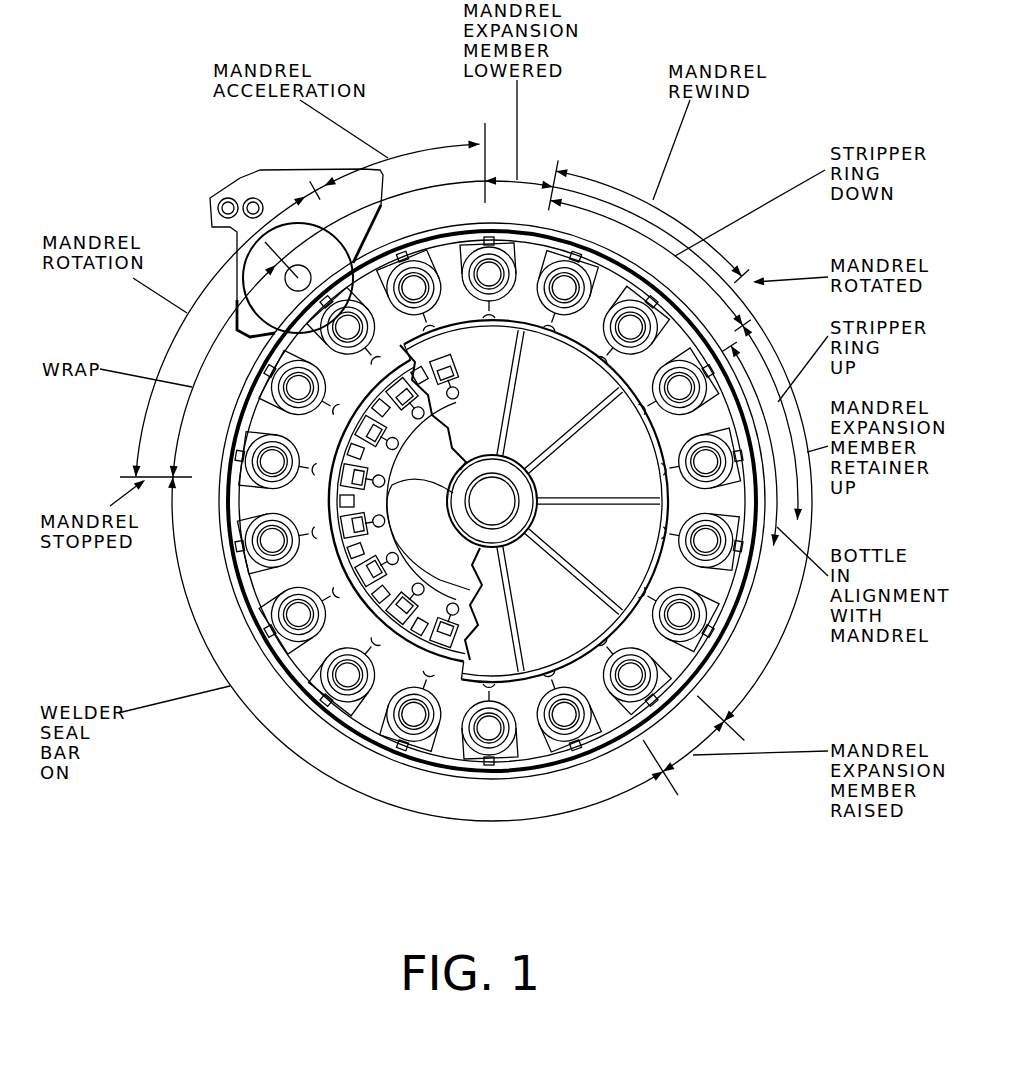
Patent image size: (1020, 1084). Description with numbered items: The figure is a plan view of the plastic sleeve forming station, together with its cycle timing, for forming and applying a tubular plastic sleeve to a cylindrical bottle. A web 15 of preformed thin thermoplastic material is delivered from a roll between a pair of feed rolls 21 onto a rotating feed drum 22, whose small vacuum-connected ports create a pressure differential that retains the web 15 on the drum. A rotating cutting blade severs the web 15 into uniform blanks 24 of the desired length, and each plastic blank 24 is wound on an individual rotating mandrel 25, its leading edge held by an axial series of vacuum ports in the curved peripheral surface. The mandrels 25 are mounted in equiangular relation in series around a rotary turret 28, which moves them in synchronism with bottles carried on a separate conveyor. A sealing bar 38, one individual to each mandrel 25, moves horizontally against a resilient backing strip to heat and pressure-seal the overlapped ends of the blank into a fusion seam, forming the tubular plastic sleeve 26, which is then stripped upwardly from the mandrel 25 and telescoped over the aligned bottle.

The web 15 is at (233, 183).
The feed rolls 21 is at (217, 198).
The feed drum 22 is at (338, 267).
The blank 24 is at (366, 328).
The mandrel 25 is at (415, 282).
The tubular plastic sleeve 26 is at (690, 630).
The rotary turret 28 is at (490, 782).
The sealing bar 38 is at (348, 447).